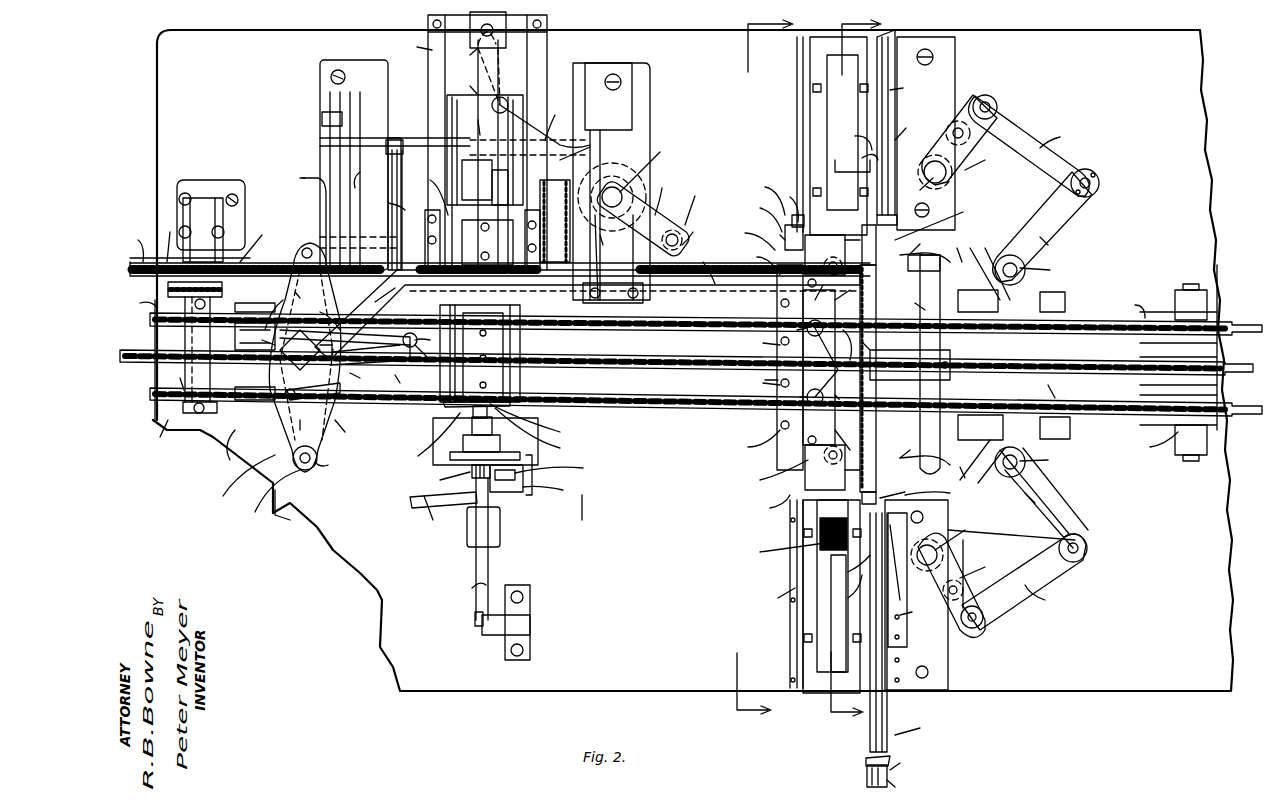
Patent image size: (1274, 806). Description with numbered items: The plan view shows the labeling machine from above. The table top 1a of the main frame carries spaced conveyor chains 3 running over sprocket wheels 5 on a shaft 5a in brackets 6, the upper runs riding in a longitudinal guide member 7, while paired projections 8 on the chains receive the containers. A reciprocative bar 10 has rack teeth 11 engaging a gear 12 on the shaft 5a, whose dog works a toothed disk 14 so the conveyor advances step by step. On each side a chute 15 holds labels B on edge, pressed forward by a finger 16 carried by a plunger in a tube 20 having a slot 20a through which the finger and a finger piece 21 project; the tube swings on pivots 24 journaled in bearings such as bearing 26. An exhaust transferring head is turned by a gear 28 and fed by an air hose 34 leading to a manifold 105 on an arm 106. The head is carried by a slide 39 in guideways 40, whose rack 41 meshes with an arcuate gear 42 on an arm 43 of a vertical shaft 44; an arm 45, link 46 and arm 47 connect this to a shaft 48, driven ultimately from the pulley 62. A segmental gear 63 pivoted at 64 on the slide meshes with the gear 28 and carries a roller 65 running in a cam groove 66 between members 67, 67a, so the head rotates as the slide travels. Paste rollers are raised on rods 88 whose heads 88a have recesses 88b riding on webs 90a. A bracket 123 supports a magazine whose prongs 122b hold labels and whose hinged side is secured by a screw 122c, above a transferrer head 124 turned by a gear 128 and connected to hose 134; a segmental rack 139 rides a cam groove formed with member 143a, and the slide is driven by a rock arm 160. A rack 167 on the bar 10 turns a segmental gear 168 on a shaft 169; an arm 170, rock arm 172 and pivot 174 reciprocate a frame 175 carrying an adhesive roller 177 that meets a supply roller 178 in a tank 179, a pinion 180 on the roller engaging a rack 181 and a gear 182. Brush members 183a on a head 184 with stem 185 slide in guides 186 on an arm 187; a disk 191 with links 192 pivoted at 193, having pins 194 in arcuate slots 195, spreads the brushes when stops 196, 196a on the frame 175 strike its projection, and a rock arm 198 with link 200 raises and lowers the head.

The table top 1a is at (693, 360).
The conveyor chains 3 is at (460, 375).
The sprocket wheels 5 is at (686, 370).
The sprocket shaft 5a is at (220, 448).
The uprights or brackets 6 is at (1173, 443).
The guide member 7 is at (706, 407).
The projections 8 is at (706, 347).
The reciprocative bar 10 is at (792, 374).
The rack teeth 11 is at (188, 251).
The gear 12 is at (191, 227).
The toothed wheel or disk 14 is at (226, 221).
The chute or trough 15 is at (780, 594).
The finger or pusher 16 is at (852, 362).
The guiding tube or casing 20 is at (905, 398).
The longitudinal slot 20a is at (906, 391).
The finger piece 21 is at (834, 365).
The pivots 24 is at (892, 509).
The bearing 26 is at (891, 759).
The gear or pinion 28 is at (826, 363).
The air hose 34 is at (921, 348).
The slide member 39 is at (833, 361).
The guideways 40 is at (803, 356).
The rack 41 is at (842, 370).
The arcuate gear 42 is at (933, 363).
The arm 43 is at (981, 356).
The vertical shaft 44 is at (1031, 366).
The arm 45 is at (1042, 353).
The link 46 is at (1030, 362).
The arm 47 is at (960, 366).
The shaft 48 is at (943, 363).
The drive pulley 62 is at (763, 379).
The segmental gear 63 is at (786, 379).
The pivot 64 is at (765, 358).
The projection or roller 65 is at (801, 362).
The cam-like groove 66 is at (836, 362).
The cam member 67 is at (779, 361).
The cam member 67a is at (847, 389).
The rods or bars 88 is at (773, 223).
The blocks or heads 88a is at (765, 193).
The recesses 88b is at (773, 229).
The lateral guides or webs 90a is at (770, 347).
The tube or manifold 105 is at (913, 364).
The arm 106 is at (910, 365).
The prongs 122b is at (511, 433).
The screw 122c is at (425, 439).
The bracket or framing 123 is at (485, 181).
The label transferrer head 124 is at (480, 353).
The gear or pinion 128 is at (451, 475).
The air hose 134 is at (442, 515).
The segmental rack 139 is at (550, 474).
The cam member 143a is at (558, 487).
The rock arm 160 is at (489, 569).
The rack 167 is at (689, 234).
The segmental gear 168 is at (643, 218).
The upright shaft 169 is at (632, 185).
The arm 170 is at (703, 203).
The rock arm 172 is at (545, 124).
The pivot 174 is at (475, 37).
The slidable frame 175 is at (468, 142).
The adhesive applying roller 177 is at (471, 218).
The supply roller 178 is at (516, 150).
The tank 179 is at (476, 80).
The pinion 180 is at (612, 257).
The rack 181 is at (537, 421).
The gear 182 is at (579, 198).
The brush members 183a is at (315, 357).
The reciprocative head 184 is at (308, 291).
The stem or rod 185 is at (266, 493).
The guides 186 is at (236, 477).
The arm 187 is at (587, 315).
The member or disk 191 is at (371, 377).
The links 192 is at (311, 361).
The pivots 193 is at (304, 415).
The pins 194 is at (370, 364).
The arcuate slots 195 is at (284, 350).
The stop 196 is at (410, 379).
The stop 196a is at (381, 199).
The rock arm 198 is at (378, 204).
The link 200 is at (301, 217).
The labels B is at (786, 551).